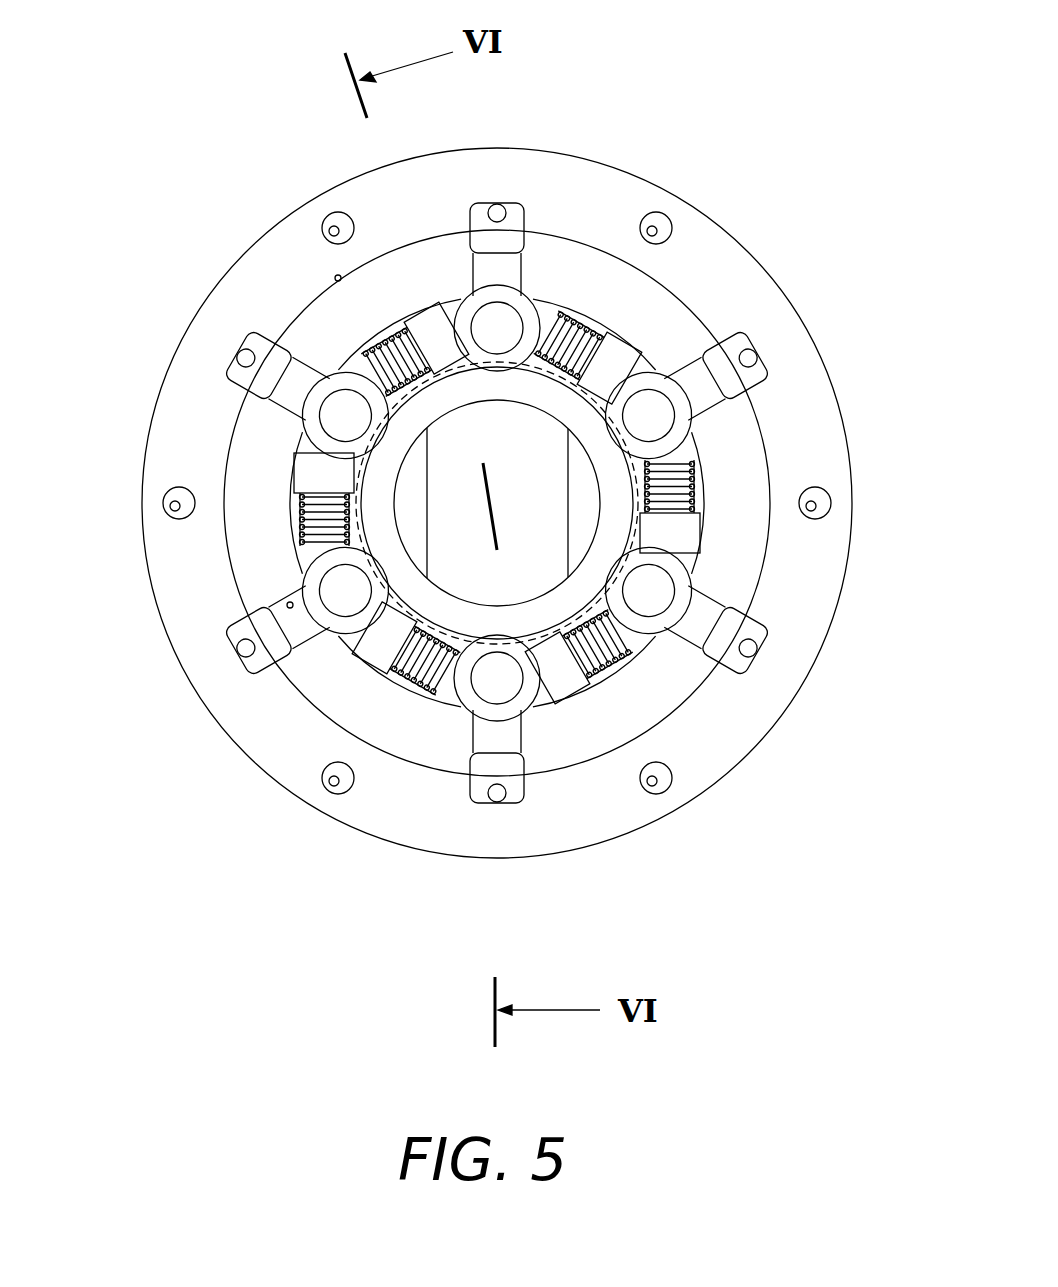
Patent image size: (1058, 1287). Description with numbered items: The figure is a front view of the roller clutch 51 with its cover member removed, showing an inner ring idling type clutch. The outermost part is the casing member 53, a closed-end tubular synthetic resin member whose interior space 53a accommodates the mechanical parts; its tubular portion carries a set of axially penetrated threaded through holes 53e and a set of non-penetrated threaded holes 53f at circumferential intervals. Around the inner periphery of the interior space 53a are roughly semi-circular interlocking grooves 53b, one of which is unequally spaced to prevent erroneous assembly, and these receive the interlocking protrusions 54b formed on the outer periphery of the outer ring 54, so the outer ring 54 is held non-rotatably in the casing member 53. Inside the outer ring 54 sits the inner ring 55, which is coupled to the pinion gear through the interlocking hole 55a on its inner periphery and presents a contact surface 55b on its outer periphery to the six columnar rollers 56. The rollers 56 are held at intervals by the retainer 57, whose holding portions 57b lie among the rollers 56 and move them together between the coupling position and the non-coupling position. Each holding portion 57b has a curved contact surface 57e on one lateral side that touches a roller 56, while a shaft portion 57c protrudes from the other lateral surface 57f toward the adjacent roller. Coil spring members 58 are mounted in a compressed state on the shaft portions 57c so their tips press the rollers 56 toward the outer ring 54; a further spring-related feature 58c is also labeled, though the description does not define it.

The roller clutch 51 is at (690, 205).
The casing member 53 is at (655, 181).
The interior space 53a is at (337, 277).
The interlocking grooves 53b is at (603, 207).
The threaded through holes 53e is at (672, 222).
The threaded holes 53f is at (338, 212).
The outer ring 54 is at (680, 291).
The interlocking protrusions 54b is at (590, 240).
The inner ring 55 is at (573, 697).
The interlocking hole 55a is at (427, 543).
The contact surface 55b is at (370, 440).
The rollers 56 is at (515, 300).
The retainer 57 is at (497, 325).
The holding portions 57b is at (630, 330).
The shaft portions 57c is at (405, 323).
The curved contact surface 57e is at (455, 300).
The other lateral surfaces 57f is at (600, 307).
The spring members 58 is at (430, 320).
The pin hole 58c is at (290, 605).